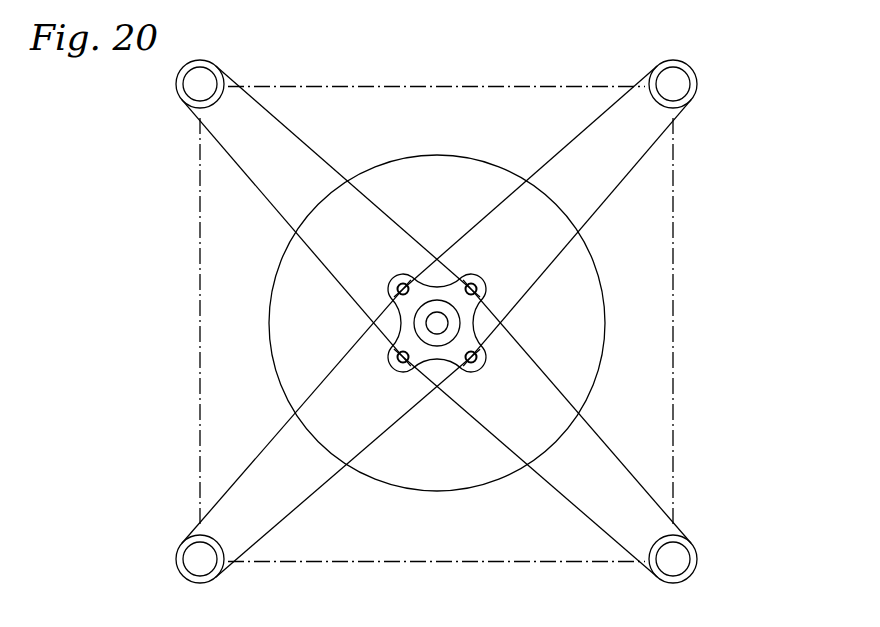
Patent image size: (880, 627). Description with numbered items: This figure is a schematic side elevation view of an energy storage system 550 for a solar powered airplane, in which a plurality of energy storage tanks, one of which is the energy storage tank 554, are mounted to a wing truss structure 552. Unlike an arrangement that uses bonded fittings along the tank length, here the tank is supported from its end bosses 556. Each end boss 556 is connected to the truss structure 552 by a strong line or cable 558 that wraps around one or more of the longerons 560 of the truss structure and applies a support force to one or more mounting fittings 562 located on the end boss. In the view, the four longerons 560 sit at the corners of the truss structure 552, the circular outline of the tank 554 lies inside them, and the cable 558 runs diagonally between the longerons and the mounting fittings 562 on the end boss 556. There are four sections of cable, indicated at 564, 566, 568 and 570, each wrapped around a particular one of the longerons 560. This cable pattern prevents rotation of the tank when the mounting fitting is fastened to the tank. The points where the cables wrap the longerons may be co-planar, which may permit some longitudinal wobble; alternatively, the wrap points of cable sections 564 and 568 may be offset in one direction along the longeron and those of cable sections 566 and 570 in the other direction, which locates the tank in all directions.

The energy storage system 550 is at (92, 194).
The wing truss structure 552 is at (710, 197).
The energy storage tank 554 is at (437, 155).
The end boss 556 is at (474, 317).
The line or cable 558 is at (243, 473).
The longeron 560 is at (176, 89).
The mounting fitting 562 is at (391, 297).
The cable section 564 is at (335, 140).
The cable section 566 is at (595, 105).
The cable section 568 is at (623, 377).
The cable section 570 is at (307, 520).